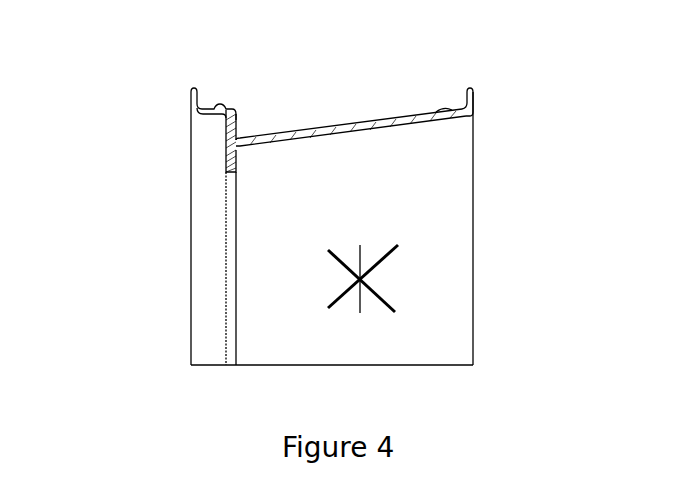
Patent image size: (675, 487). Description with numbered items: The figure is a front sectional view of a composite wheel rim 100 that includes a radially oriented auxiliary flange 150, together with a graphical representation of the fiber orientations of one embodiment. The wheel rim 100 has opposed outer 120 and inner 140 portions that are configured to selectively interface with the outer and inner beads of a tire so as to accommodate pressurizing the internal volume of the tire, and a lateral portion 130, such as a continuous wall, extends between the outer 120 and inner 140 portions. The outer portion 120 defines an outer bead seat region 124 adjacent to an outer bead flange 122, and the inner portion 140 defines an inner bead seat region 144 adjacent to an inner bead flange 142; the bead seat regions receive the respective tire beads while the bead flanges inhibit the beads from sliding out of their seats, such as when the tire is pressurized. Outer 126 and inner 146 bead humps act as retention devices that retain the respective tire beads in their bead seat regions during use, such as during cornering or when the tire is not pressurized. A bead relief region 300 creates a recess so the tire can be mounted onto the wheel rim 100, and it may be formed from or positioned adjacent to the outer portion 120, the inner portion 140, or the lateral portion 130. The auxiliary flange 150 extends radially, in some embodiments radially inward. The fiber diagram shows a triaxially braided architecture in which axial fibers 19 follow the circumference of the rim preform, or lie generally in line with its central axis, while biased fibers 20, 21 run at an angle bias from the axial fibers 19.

The wheel rim 100 is at (137, 278).
The outer portion 120 is at (192, 182).
The outer bead flange 122 is at (192, 88).
The outer bead seat region 124 is at (213, 103).
The outer bead hump 126 is at (232, 108).
The auxiliary flange 150 is at (227, 170).
The bead relief region 300 is at (243, 136).
The inner portion 140 is at (475, 138).
The inner bead flange 142 is at (475, 88).
The inner bead seat region 144 is at (457, 102).
The inner bead hump 146 is at (442, 106).
The lateral portion 130 is at (400, 198).
The biased fibers 20 is at (395, 248).
The biased fibers 21 is at (375, 292).
The axial fibers 19 is at (362, 308).